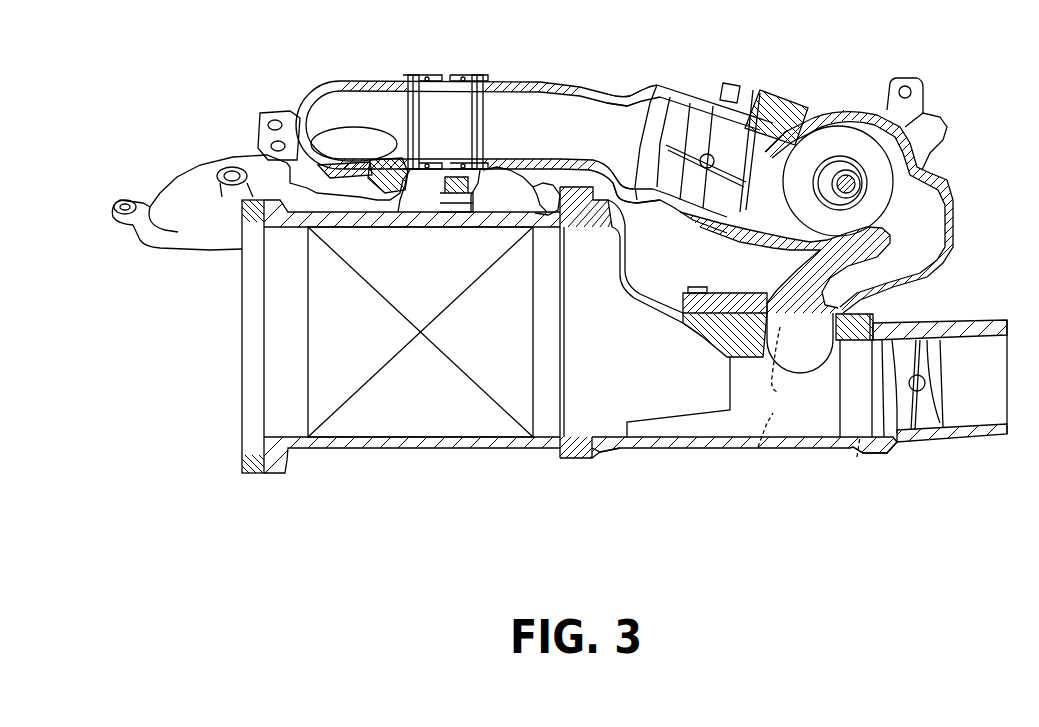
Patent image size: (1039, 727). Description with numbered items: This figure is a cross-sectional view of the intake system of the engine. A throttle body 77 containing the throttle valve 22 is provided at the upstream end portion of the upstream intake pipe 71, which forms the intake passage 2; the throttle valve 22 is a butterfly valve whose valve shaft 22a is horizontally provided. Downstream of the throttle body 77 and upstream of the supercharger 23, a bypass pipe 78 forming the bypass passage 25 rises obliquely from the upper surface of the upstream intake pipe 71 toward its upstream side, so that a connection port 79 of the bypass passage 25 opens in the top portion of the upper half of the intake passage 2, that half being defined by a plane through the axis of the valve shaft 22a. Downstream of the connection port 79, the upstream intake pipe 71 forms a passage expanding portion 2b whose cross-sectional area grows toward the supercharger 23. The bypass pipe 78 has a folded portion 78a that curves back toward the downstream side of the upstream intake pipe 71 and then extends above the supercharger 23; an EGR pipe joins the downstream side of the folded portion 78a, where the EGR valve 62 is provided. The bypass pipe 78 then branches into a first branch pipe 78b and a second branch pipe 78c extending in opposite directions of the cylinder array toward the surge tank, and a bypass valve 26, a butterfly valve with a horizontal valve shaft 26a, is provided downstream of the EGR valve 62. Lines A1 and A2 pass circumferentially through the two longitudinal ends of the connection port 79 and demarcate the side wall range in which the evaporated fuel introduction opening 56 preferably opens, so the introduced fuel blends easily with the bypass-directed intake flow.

The intake passage 2 is at (720, 450).
The passage expanding portion 2b is at (600, 414).
The supercharger 23 is at (397, 449).
The bypass passage 25 is at (633, 100).
The bypass valve 26 is at (690, 140).
The valve shaft 26a is at (740, 113).
The evaporated fuel introduction opening 56 is at (812, 362).
The EGR valve 62 is at (835, 170).
The upstream intake pipe 71 is at (790, 449).
The throttle body 77 is at (915, 458).
The bypass pipe 78 is at (609, 80).
The folded portion 78a is at (958, 224).
The first branch pipe 78b is at (193, 177).
The second branch pipe 78c is at (496, 174).
The connection port 79 is at (808, 358).
The throttle valve 22 is at (926, 330).
The valve shaft 22a is at (942, 442).
The line A1 is at (758, 447).
The line A2 is at (857, 457).